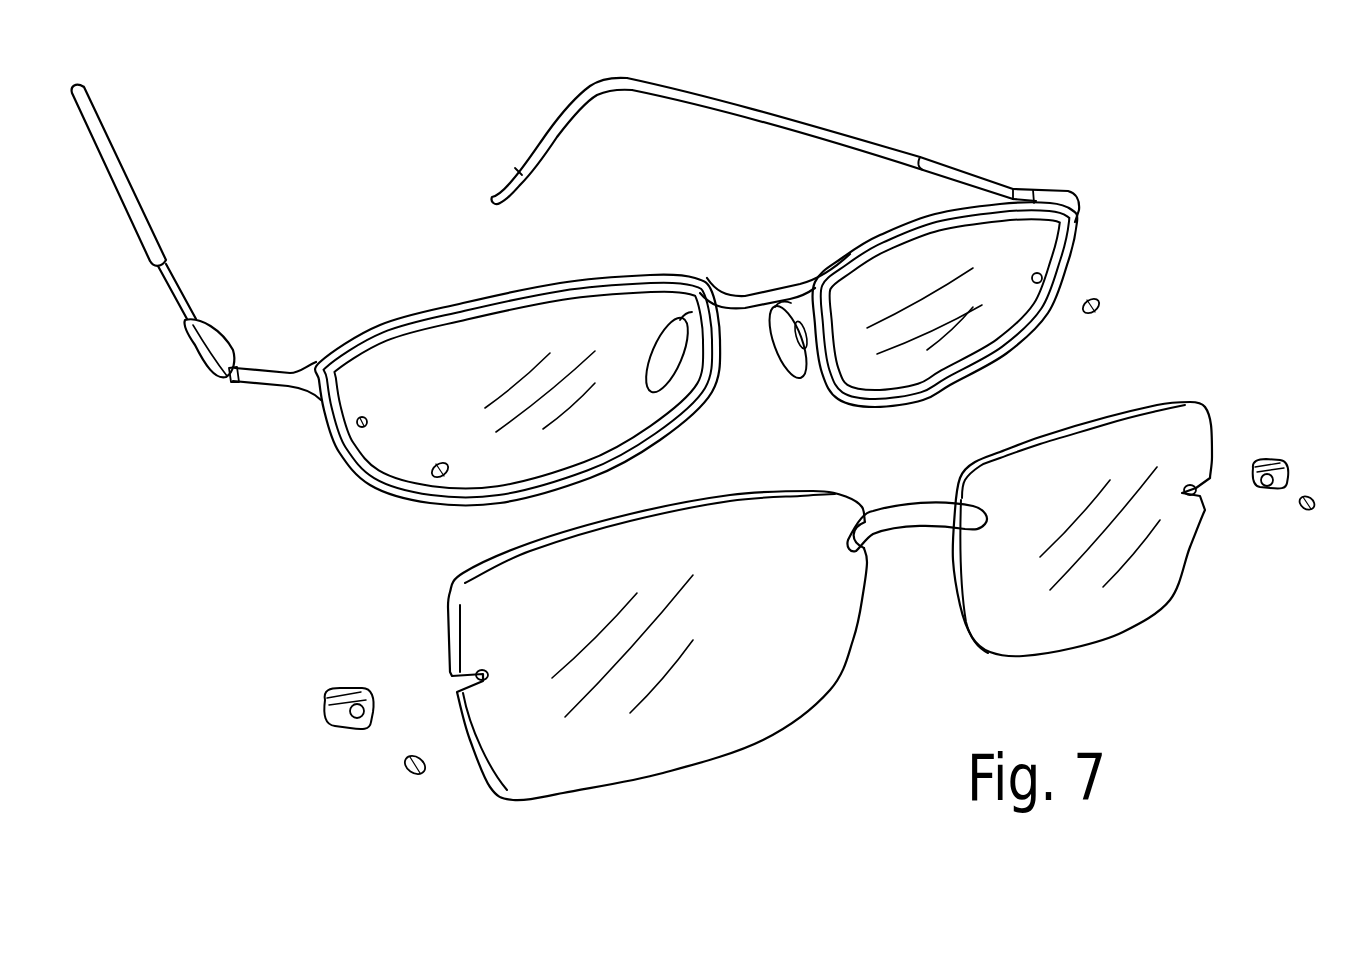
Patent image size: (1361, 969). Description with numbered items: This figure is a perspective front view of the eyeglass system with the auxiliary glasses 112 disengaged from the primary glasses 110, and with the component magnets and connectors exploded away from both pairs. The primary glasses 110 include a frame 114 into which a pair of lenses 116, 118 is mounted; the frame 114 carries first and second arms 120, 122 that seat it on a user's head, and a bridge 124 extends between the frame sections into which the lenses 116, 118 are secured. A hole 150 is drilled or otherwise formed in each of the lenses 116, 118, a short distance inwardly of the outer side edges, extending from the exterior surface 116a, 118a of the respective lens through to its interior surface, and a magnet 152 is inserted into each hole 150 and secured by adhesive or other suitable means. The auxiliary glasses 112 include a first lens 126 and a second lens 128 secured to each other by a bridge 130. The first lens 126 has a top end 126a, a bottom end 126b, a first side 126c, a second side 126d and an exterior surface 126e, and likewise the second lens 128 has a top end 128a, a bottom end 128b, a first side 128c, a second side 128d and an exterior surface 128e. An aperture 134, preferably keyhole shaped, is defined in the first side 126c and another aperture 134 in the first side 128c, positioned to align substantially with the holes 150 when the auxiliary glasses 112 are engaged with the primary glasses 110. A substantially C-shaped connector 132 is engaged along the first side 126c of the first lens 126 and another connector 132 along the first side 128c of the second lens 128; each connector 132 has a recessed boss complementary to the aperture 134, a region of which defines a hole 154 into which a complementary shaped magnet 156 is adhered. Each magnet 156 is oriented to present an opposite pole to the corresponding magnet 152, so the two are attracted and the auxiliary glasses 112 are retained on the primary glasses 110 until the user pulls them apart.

The primary glasses 110 is at (658, 327).
The auxiliary glasses 112 is at (775, 584).
The frame 114 is at (683, 341).
The lens 116 is at (945, 292).
The exterior surface 116a is at (924, 251).
The lens 118 is at (474, 380).
The exterior surface 118a is at (504, 366).
The first arm 120 is at (825, 127).
The second arm 122 is at (142, 212).
The bridge 124 is at (763, 286).
The first lens 126 is at (1112, 538).
The top end 126a is at (1056, 427).
The bottom end 126b is at (1093, 642).
The first side 126c is at (1193, 557).
The second side 126d is at (966, 622).
The exterior surface 126e is at (1037, 505).
The second lens 128 is at (631, 651).
The top end 128a is at (667, 506).
The bottom end 128b is at (669, 777).
The first side 128c is at (450, 625).
The second side 128d is at (847, 657).
The exterior surface 128e is at (727, 583).
The bridge 130 is at (909, 521).
The connector 132 is at (333, 711).
The aperture 134 is at (490, 678).
The hole 150 is at (356, 432).
The magnet 152 is at (430, 476).
The hole 154 is at (371, 711).
The magnet 156 is at (410, 768).